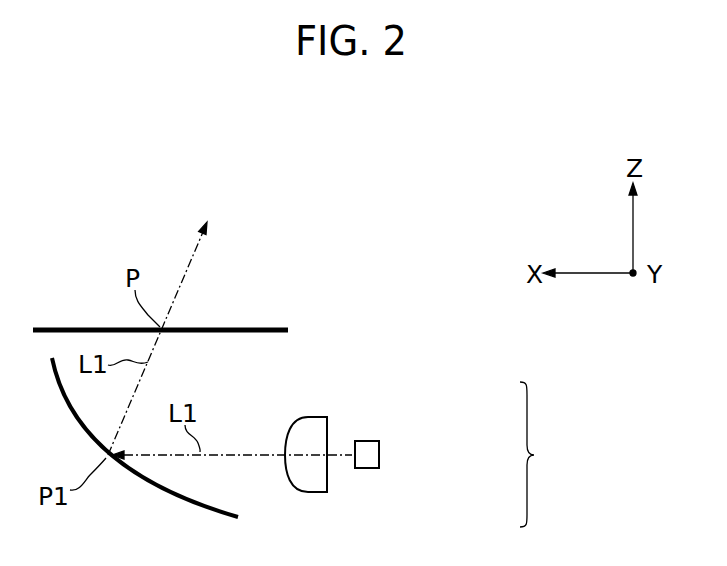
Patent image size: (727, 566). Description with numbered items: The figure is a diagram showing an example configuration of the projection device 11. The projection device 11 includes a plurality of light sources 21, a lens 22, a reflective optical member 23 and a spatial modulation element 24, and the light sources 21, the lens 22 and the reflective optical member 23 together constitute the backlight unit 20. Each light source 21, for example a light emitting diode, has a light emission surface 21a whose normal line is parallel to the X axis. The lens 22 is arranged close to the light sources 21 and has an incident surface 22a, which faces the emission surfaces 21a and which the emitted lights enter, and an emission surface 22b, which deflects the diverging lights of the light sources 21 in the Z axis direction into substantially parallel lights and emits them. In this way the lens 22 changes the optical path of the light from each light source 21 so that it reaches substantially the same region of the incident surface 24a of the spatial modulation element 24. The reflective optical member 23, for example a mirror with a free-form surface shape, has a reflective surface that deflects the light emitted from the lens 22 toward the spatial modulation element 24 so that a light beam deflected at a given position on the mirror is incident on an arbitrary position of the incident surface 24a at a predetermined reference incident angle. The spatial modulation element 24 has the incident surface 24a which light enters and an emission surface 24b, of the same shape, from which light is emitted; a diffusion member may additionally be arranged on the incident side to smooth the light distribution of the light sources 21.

The projection device 11 is at (318, 212).
The backlight unit 20 is at (548, 454).
The light source 21 is at (396, 450).
The light emission surface 21a is at (355, 464).
The lens 22 is at (340, 421).
The incident surface 22a is at (329, 478).
The emission surface 22b is at (286, 458).
The reflective optical member 23 is at (255, 516).
The spatial modulation element 24 is at (297, 327).
The incident surface 24a is at (222, 334).
The emission surface 24b is at (258, 327).